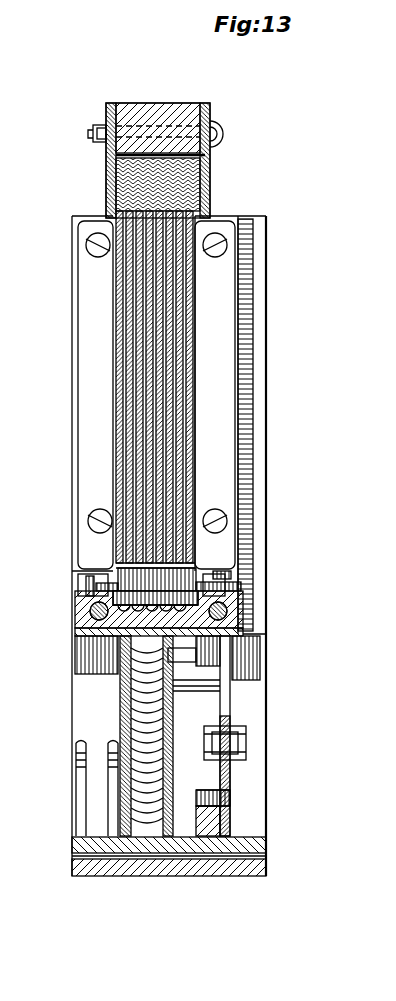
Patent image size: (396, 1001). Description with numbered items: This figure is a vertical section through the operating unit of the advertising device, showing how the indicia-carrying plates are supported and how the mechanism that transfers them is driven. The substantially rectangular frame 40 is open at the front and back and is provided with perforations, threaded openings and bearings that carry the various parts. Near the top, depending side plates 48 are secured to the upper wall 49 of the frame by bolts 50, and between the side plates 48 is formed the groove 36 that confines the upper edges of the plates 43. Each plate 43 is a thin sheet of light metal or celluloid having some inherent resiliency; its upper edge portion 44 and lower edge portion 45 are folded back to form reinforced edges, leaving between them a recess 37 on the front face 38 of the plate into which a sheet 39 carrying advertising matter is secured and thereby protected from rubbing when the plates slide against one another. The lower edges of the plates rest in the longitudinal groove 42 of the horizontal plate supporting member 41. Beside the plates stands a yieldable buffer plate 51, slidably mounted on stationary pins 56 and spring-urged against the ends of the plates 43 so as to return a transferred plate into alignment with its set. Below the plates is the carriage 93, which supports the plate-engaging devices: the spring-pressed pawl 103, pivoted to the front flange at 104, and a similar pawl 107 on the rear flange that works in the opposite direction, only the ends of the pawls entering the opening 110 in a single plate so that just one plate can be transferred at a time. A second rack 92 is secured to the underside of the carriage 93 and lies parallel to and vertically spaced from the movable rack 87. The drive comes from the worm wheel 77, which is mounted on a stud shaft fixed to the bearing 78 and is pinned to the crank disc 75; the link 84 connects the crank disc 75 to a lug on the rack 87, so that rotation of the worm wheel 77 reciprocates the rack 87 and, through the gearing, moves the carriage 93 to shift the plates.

The frame 40 is at (150, 90).
The upper wall 49 is at (176, 108).
The bolts 50 is at (210, 121).
The groove 36 is at (203, 145).
The depending side plates 48 is at (203, 153).
The upper edge portion 44 is at (132, 189).
The stationary pins 56 is at (80, 241).
The recess 37 is at (178, 348).
The front face 38 is at (197, 366).
The sheet 39 is at (199, 472).
The plates 43 is at (132, 462).
The yieldable buffer plate 51 is at (218, 376).
The lower edge portion 45 is at (188, 558).
The opening 110 is at (112, 568).
The pawl 107 is at (80, 580).
The pivot 104 is at (222, 565).
The spring-pressed pawl 103 is at (238, 578).
The carriage 93 is at (67, 605).
The plate supporting member 41 is at (67, 627).
The longitudinal groove 42 is at (212, 625).
The second rack 92 is at (194, 669).
The crank disc 75 is at (222, 672).
The link 84 is at (222, 730).
The bearing 78 is at (68, 751).
The movable rack 87 is at (222, 770).
The worm wheel 77 is at (112, 804).